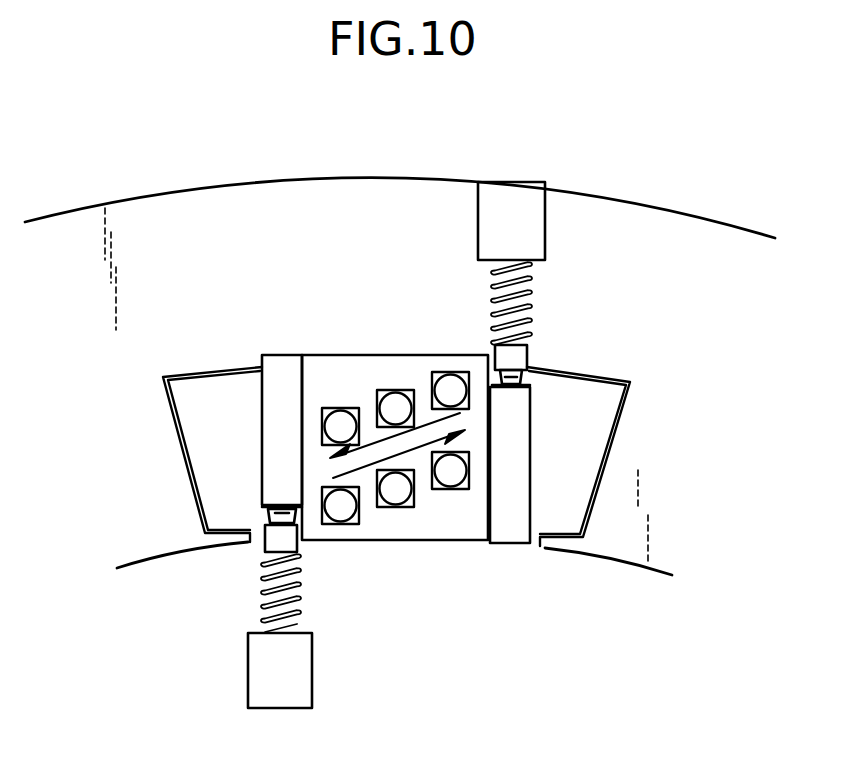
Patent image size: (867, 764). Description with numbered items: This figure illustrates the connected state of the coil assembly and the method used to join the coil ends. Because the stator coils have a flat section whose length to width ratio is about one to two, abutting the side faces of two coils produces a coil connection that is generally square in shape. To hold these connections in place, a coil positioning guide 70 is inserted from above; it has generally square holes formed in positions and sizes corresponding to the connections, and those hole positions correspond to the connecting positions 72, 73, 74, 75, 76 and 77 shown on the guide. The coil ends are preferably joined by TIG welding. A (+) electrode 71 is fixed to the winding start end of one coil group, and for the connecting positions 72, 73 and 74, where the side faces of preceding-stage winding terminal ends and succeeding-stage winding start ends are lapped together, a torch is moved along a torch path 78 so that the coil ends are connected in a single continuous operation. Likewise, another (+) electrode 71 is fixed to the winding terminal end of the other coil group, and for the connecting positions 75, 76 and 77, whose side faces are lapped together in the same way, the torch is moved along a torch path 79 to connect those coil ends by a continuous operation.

The coil positioning guide 70 is at (263, 397).
The (+) electrode 71 is at (523, 192).
The connecting position 72 is at (340, 505).
The connecting position 73 is at (396, 490).
The connecting position 74 is at (450, 470).
The connecting position 75 is at (450, 390).
The connecting position 76 is at (395, 408).
The connecting position 77 is at (340, 425).
The torch path 78 is at (462, 432).
The torch path 79 is at (457, 415).